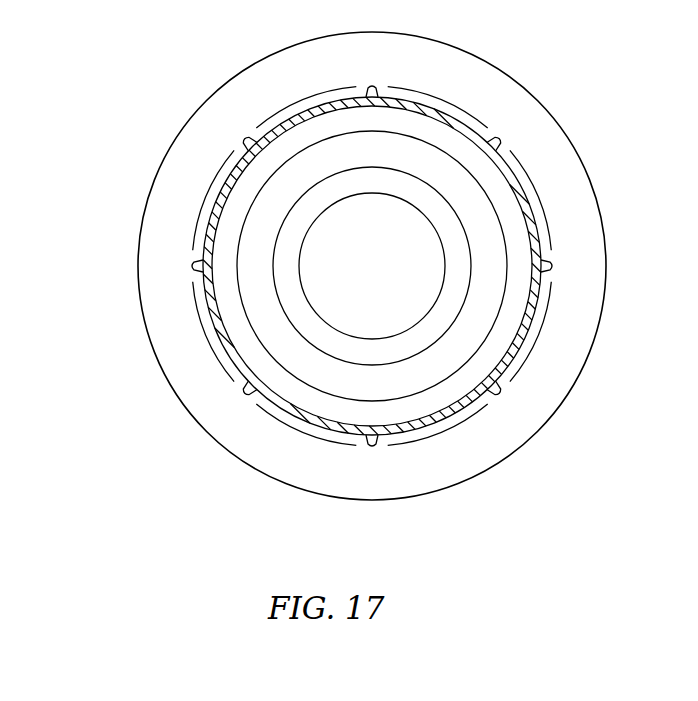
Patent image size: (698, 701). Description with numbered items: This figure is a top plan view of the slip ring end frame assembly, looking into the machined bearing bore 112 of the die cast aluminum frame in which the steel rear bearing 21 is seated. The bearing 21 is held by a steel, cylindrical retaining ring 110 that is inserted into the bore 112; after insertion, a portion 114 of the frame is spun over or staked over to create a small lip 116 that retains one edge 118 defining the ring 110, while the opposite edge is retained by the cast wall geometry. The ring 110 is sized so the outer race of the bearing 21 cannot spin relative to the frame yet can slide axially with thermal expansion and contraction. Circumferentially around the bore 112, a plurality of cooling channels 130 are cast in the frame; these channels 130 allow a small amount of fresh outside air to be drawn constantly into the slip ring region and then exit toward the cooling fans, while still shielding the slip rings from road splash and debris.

The retaining ring 110 is at (408, 100).
The bearing bore 112 is at (210, 217).
The portion of the SRE frame 114 is at (285, 110).
The lip 116 is at (537, 307).
The edge of the retaining ring 118 is at (480, 124).
The rear bearing 21 is at (295, 392).
The cooling channels 130 is at (369, 446).